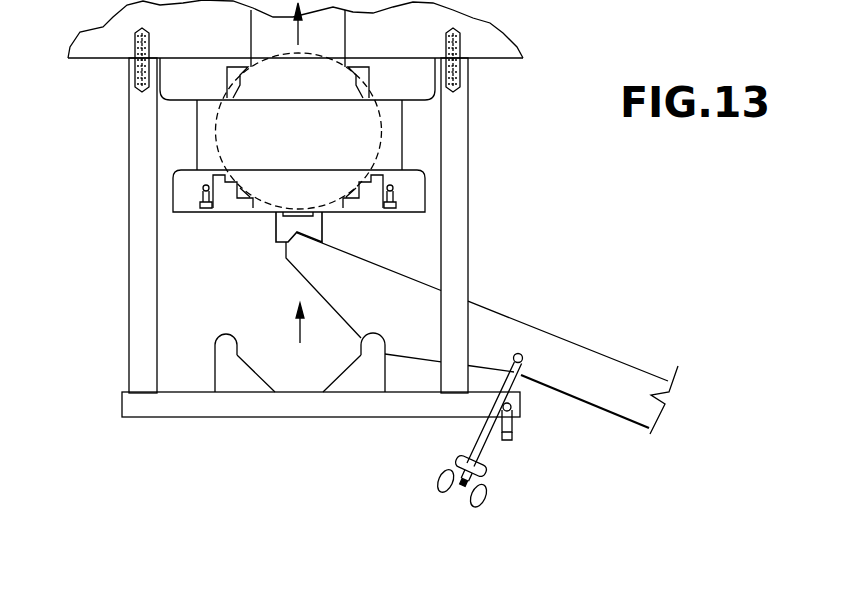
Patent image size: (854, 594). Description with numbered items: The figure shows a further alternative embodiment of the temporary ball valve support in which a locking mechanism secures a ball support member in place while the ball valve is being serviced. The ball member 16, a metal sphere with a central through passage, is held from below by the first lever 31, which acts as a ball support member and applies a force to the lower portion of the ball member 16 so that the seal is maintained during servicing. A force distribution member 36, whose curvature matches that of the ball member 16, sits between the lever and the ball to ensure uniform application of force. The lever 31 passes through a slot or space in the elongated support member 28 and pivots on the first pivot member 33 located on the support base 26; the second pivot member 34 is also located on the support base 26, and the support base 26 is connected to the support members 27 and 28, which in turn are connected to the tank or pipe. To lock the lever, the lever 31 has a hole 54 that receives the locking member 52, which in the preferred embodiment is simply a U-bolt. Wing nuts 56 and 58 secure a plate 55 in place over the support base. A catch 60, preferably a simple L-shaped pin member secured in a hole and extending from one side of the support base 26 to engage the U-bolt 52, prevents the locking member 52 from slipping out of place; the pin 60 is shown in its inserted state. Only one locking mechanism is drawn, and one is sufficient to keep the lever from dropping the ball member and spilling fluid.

The ball member 16 is at (317, 128).
The support base 26 is at (225, 418).
The support member 27 is at (138, 296).
The support member 28 is at (453, 242).
The first lever 31 is at (503, 335).
The first pivot member 33 is at (371, 364).
The second pivot member 34 is at (223, 360).
The force distribution member 36 is at (288, 226).
The locking member 52 is at (517, 383).
The hole 54 is at (520, 360).
The plate 55 is at (463, 457).
The wing nut 56 is at (511, 513).
The wing nut 58 is at (478, 497).
The catch 60 is at (512, 433).